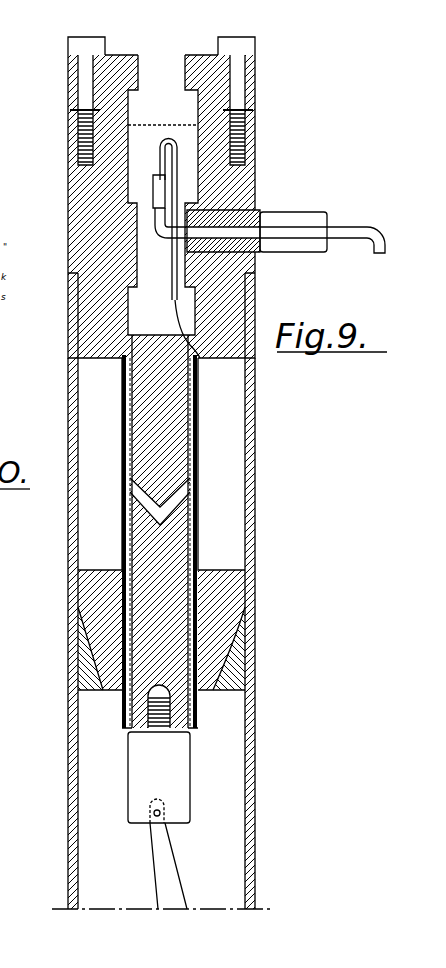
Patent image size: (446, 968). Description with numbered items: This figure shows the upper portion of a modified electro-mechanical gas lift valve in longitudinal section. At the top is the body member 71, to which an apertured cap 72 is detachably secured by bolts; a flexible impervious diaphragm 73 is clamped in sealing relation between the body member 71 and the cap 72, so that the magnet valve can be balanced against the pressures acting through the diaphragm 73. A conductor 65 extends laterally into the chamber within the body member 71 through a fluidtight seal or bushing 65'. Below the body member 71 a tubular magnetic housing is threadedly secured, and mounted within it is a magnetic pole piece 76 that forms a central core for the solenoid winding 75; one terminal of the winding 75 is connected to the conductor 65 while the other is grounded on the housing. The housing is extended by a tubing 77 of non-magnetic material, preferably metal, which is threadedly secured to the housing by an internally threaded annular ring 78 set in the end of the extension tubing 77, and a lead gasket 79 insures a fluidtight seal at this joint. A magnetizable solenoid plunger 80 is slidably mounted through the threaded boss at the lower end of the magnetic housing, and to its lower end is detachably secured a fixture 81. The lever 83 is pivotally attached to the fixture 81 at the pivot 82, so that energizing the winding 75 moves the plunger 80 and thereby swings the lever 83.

The body member 71 is at (75, 209).
The apertured cap 72 is at (257, 66).
The flexible impervious diaphragm 73 is at (176, 125).
The fluidtight seal or bushing 65' is at (271, 197).
The conductor 65 is at (292, 211).
The solenoid winding 75 is at (230, 387).
The magnetic pole piece 76 is at (147, 420).
The tubing of non-magnetic material 77 is at (255, 702).
The internally threaded annular ring 78 is at (232, 660).
The lead gasket 79 is at (252, 473).
The solenoid plunger 80 is at (172, 590).
The fixture 81 is at (138, 783).
The pivot 82 is at (152, 823).
The lever 83 is at (175, 892).